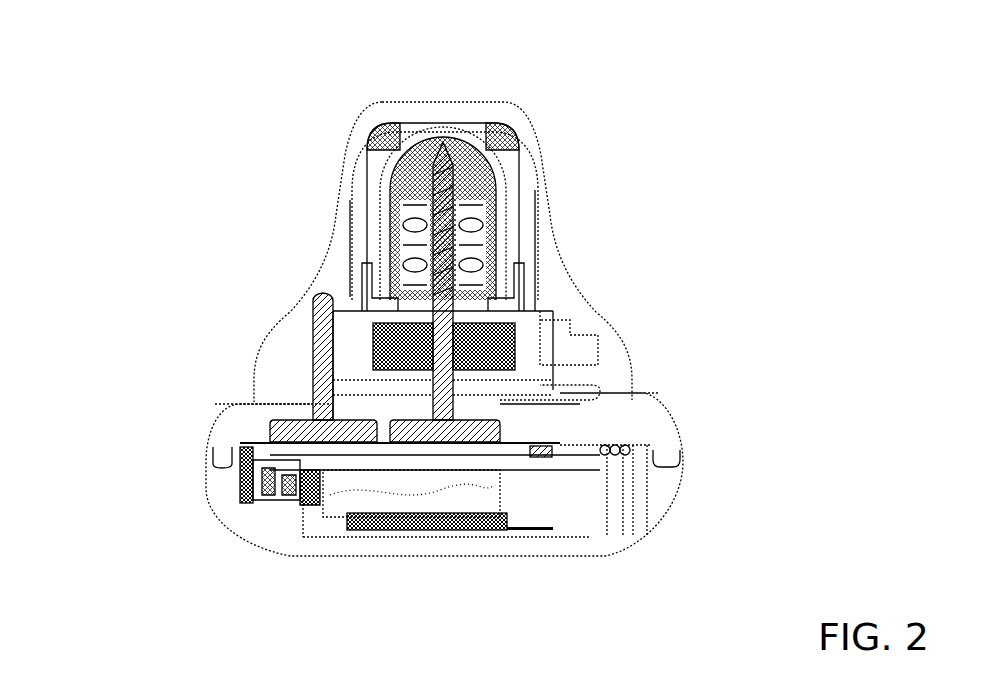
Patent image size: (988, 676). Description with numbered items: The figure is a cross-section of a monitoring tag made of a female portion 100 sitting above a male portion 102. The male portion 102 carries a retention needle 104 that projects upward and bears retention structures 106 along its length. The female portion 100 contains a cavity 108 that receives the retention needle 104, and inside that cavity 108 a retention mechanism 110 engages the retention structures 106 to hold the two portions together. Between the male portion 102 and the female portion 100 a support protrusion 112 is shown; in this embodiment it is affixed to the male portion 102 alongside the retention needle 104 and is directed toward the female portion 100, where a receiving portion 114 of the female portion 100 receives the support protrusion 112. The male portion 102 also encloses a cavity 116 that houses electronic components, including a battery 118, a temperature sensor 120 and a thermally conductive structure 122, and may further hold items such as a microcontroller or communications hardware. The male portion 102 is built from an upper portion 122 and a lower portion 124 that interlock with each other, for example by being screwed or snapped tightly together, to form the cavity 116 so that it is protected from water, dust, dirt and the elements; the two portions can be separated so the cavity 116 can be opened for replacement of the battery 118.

The female portion 100 is at (527, 132).
The male portion 102 is at (680, 427).
The retention needle 104 is at (443, 443).
The retention structures 106 is at (458, 285).
The cavity 108 is at (385, 130).
The retention mechanism 110 is at (372, 165).
The support protrusion 112 is at (262, 403).
The receiving portion 114 is at (312, 311).
The cavity 116 is at (605, 522).
The battery 118 is at (243, 490).
The temperature sensor 120 is at (552, 452).
The upper portion 122 is at (220, 422).
The lower portion 124 is at (233, 513).